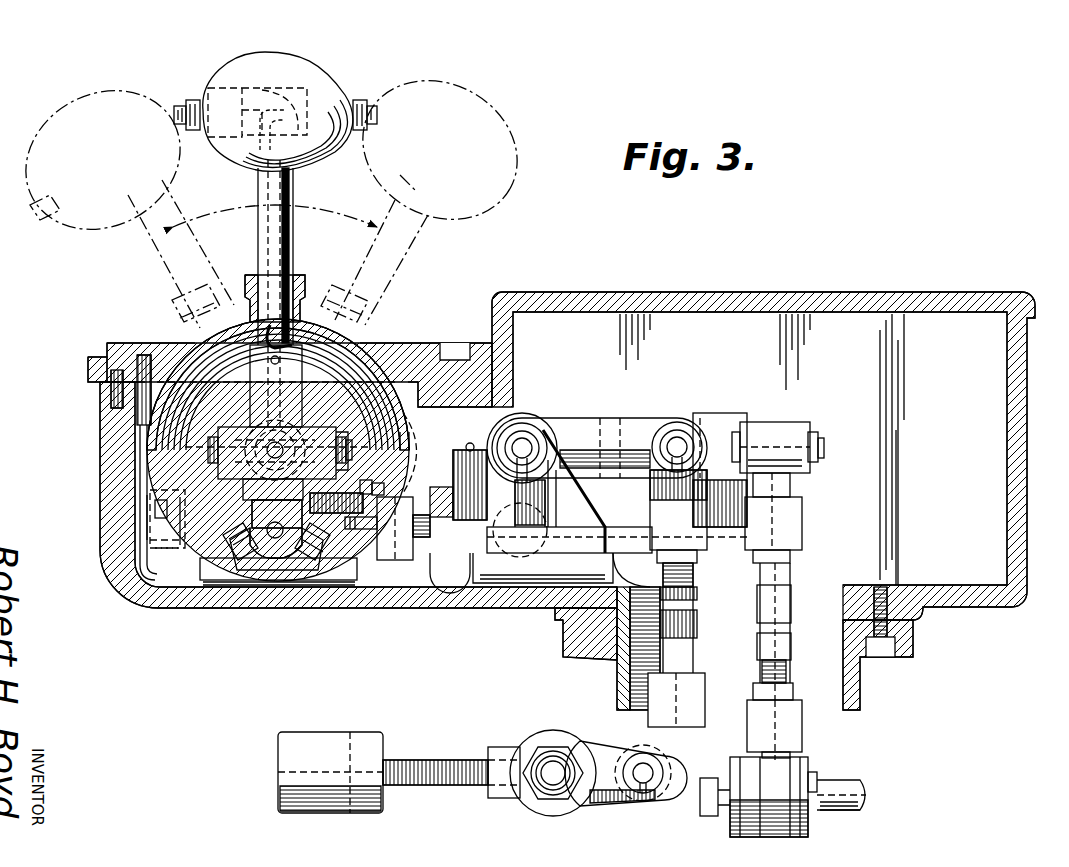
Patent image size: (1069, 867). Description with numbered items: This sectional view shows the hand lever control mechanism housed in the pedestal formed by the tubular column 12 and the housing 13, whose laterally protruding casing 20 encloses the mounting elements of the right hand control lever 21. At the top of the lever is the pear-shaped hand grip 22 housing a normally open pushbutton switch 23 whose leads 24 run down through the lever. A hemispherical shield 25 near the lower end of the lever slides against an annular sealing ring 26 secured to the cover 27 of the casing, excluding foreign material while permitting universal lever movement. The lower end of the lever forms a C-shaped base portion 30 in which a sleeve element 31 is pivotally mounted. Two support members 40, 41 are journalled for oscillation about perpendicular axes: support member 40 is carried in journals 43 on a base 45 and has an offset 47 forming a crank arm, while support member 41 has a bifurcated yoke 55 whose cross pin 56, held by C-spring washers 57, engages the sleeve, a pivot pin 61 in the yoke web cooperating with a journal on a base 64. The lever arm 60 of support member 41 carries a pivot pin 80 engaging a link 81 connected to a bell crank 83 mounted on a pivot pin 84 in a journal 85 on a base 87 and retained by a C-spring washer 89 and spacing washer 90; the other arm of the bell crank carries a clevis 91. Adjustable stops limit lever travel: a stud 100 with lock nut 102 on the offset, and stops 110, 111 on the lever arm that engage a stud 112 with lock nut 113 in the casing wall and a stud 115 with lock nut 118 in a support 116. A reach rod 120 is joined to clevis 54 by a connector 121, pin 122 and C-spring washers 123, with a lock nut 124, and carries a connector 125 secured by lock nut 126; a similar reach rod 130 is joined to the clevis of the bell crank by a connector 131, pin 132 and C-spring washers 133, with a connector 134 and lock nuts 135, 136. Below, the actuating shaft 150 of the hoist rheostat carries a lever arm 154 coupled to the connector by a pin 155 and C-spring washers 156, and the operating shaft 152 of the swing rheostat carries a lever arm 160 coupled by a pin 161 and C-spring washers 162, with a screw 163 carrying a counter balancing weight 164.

The tubular column 12 is at (617, 680).
The housing 13 is at (1031, 397).
The casing 20 is at (100, 468).
The hand lever 21 is at (295, 183).
The hand grip 22 is at (305, 66).
The pushbutton switch 23 is at (186, 99).
The leads 24 is at (342, 345).
The hemispherical shield 25 is at (308, 318).
The sealing ring 26 is at (410, 343).
The cover 27 is at (88, 360).
The base portion 30 is at (305, 400).
The sleeve element 31 is at (305, 415).
The support member 40 is at (427, 438).
The support member 41 is at (243, 489).
The journals 43 is at (725, 413).
The base 45 is at (618, 527).
The offset 47 is at (338, 493).
The clevis 54 is at (798, 430).
The yoke 55 is at (338, 428).
The cross pin 56 is at (352, 452).
The C-spring washers 57 is at (346, 443).
The lever arm 60 is at (252, 508).
The pivot pin 61 is at (268, 445).
The base 64 is at (205, 558).
The pivot pin 80 is at (276, 549).
The link 81 is at (467, 520).
The bell crank 83 is at (574, 419).
The pivot pin 84 is at (525, 440).
The journal 85 is at (540, 432).
The base 87 is at (588, 500).
The C-spring washer 89 is at (535, 442).
The spacing washer 90 is at (545, 451).
The clevis 91 is at (645, 418).
The stud 100 is at (368, 480).
The lock nut 102 is at (381, 486).
The stop 110 is at (232, 536).
The stop 111 is at (318, 558).
The stud 112 is at (195, 500).
The lock nut 113 is at (180, 548).
The stud 115 is at (362, 528).
The support 116 is at (413, 546).
The lock nut 118 is at (432, 531).
The reach rod 120 is at (793, 592).
The connector 121 is at (802, 512).
The pin 122 is at (824, 450).
The C-spring washers 123 is at (738, 432).
The lock nut 124 is at (790, 556).
The connector 125 is at (803, 738).
The lock nut 126 is at (795, 695).
The reach rod 130 is at (697, 592).
The connector 131 is at (657, 537).
The pin 132 is at (677, 440).
The C-spring washers 133 is at (681, 440).
The connector 134 is at (648, 700).
The lock nut 135 is at (657, 558).
The lock nut 136 is at (618, 664).
The actuating shaft 150 is at (858, 782).
The operating shaft 152 is at (553, 782).
The lever arm 154 is at (808, 828).
The pin 155 is at (830, 810).
The C-spring washers 156 is at (817, 781).
The lever arm 160 is at (612, 745).
The pin 161 is at (640, 790).
The C-spring washers 162 is at (645, 788).
The screw 163 is at (404, 758).
The counter balancing weight 164 is at (332, 732).